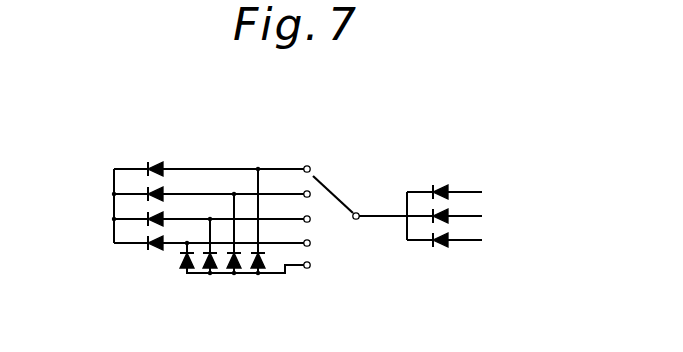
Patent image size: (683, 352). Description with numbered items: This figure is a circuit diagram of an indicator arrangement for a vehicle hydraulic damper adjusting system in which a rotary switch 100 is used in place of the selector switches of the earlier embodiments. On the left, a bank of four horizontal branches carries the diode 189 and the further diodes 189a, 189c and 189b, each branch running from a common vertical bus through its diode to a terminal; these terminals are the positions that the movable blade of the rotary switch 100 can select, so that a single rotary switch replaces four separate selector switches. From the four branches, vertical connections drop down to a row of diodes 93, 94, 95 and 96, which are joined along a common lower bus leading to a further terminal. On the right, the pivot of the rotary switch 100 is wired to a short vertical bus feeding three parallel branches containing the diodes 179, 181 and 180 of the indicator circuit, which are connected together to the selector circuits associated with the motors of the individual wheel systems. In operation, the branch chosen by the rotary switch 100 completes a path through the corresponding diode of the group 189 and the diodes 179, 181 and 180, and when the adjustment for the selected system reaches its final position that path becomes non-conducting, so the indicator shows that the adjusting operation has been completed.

The diode 189 is at (150, 164).
The diode 189a is at (143, 190).
The diode 189b is at (143, 238).
The diode 189c is at (143, 216).
The diode 96 is at (177, 263).
The diode 95 is at (218, 274).
The diode 94 is at (240, 272).
The diode 93 is at (268, 263).
The rotary switch 100 is at (353, 200).
The diode 179 is at (451, 189).
The diode 181 is at (450, 207).
The diode 180 is at (450, 233).